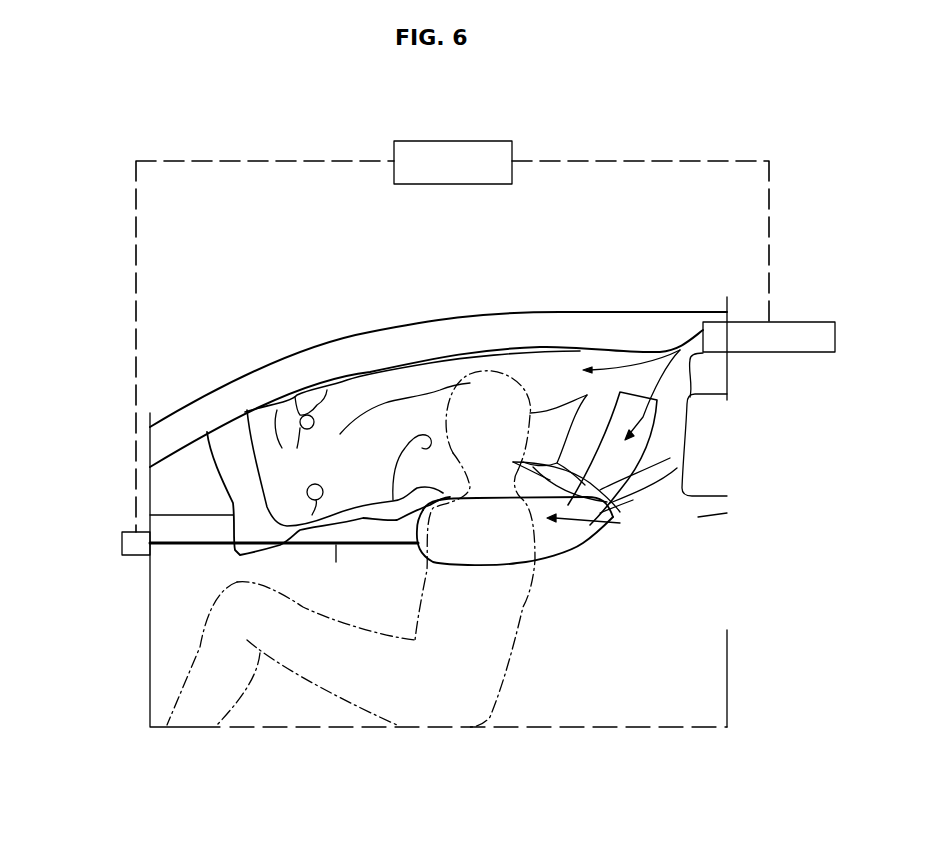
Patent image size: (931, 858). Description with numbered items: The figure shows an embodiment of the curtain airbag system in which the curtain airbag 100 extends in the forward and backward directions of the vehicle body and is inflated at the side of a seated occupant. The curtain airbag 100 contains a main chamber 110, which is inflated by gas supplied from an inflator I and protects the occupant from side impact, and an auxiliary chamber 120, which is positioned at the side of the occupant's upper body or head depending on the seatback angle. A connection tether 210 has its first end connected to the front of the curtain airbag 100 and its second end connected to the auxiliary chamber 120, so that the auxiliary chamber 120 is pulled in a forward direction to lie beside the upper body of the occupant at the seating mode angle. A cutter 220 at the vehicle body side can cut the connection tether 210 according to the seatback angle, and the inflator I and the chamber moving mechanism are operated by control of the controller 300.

The controller 300 is at (452, 141).
The curtain airbag 100 is at (387, 367).
The main chamber 110 is at (423, 412).
The auxiliary chamber 120 is at (550, 560).
The cutter 220 is at (122, 545).
The connection tether 210 is at (336, 545).
The inflator I is at (805, 322).